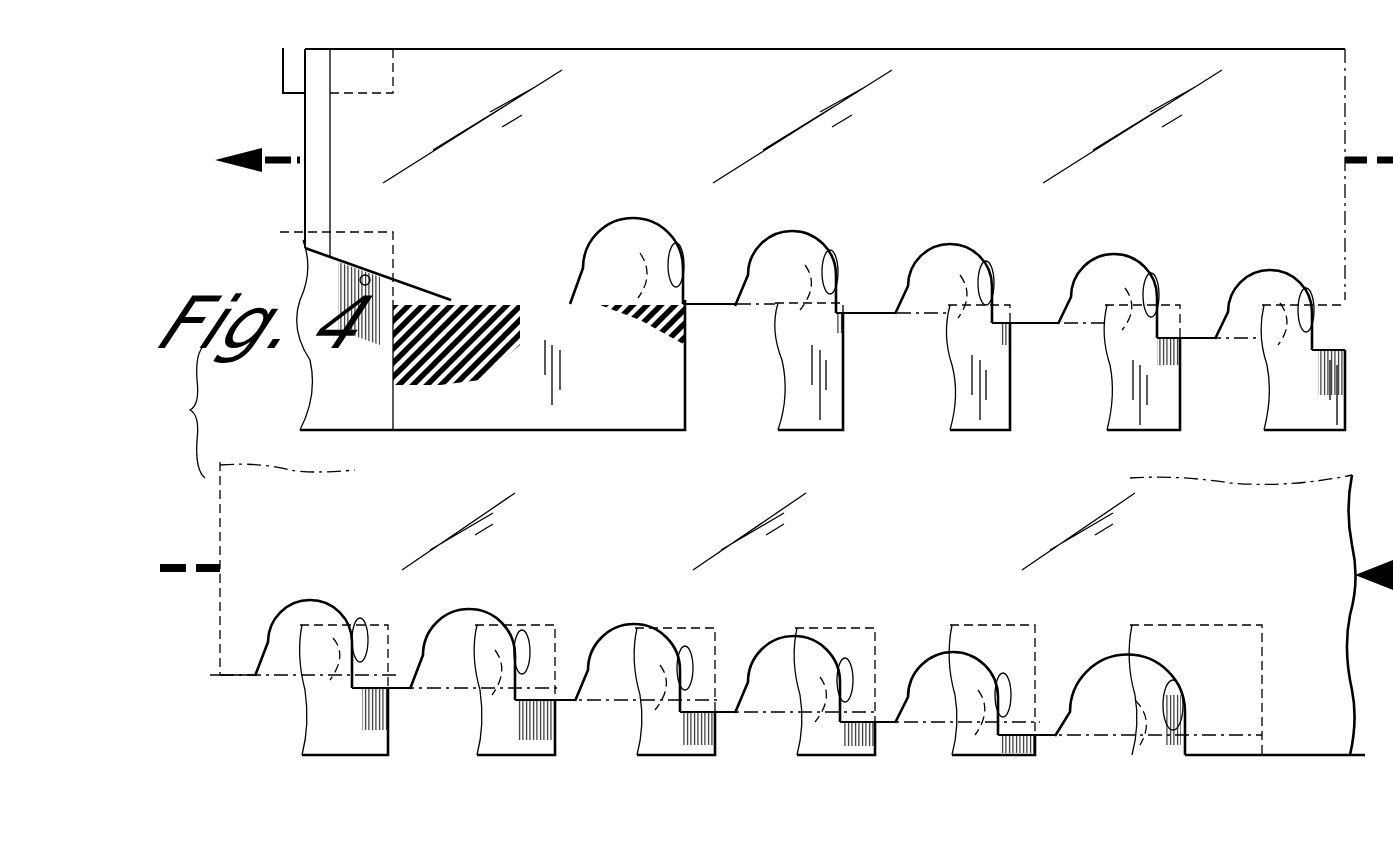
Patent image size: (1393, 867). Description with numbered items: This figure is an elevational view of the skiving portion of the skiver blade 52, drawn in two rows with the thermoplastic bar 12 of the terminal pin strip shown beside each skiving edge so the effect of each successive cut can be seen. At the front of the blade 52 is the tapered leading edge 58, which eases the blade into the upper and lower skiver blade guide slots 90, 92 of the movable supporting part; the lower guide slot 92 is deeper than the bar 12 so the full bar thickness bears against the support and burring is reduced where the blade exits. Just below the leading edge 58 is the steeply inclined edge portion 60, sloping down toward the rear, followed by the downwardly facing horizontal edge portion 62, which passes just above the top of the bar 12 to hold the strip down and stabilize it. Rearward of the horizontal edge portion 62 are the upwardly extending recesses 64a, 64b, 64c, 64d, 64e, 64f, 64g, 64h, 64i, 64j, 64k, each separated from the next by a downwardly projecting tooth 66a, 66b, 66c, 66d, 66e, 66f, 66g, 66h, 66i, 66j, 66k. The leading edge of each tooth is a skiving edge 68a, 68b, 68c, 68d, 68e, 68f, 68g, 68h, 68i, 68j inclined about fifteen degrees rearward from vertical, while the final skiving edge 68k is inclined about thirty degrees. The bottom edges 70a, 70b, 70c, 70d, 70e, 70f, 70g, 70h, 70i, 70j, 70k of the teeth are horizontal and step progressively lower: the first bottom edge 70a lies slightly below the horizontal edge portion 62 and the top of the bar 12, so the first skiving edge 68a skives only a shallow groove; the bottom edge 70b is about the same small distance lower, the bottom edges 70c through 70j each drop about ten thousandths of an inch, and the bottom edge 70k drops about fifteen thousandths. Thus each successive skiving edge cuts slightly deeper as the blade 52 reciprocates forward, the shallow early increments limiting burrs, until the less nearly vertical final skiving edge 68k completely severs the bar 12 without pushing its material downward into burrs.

The thermoplastic bar 12 is at (665, 395).
The skiver blade 52 is at (1335, 208).
The leading edge 58 is at (312, 192).
The inclined edge portion 60 is at (380, 282).
The horizontal edge portion 62 is at (553, 308).
The upper skiver blade guide slot 90 is at (300, 75).
The lower skiver blade guide slot 92 is at (345, 352).
The recess 64a is at (640, 227).
The recess 64b is at (802, 234).
The recess 64c is at (955, 240).
The recess 64d is at (1118, 258).
The recess 64e is at (1278, 270).
The recess 64f is at (326, 605).
The recess 64g is at (478, 614).
The recess 64h is at (630, 632).
The recess 64i is at (782, 640).
The recess 64j is at (945, 656).
The recess 64k is at (1105, 672).
The first skiving edge 68a is at (683, 248).
The skiving edge 68b is at (838, 255).
The skiving edge 68c is at (1000, 260).
The skiving edge 68d is at (1163, 282).
The skiving edge 68e is at (1320, 288).
The skiving edge 68f is at (368, 625).
The skiving edge 68g is at (520, 632).
The skiving edge 68h is at (686, 640).
The skiving edge 68i is at (846, 670).
The skiving edge 68j is at (1003, 682).
The final skiving edge 68k is at (1176, 688).
The tooth 66a is at (700, 285).
The tooth 66b is at (870, 282).
The tooth 66c is at (1028, 290).
The tooth 66d is at (1200, 298).
The tooth 66e is at (240, 665).
The tooth 66f is at (398, 670).
The tooth 66g is at (570, 672).
The tooth 66h is at (733, 688).
The tooth 66i is at (890, 712).
The tooth 66j is at (1048, 738).
The tooth 66k is at (1192, 752).
The bottom edge 70a is at (718, 305).
The bottom edge 70b is at (887, 313).
The bottom edge 70c is at (1045, 323).
The bottom edge 70d is at (1213, 338).
The bottom edge 70e is at (1340, 352).
The bottom edge 70f is at (415, 690).
The bottom edge 70g is at (600, 702).
The bottom edge 70h is at (707, 728).
The bottom edge 70i is at (897, 722).
The bottom edge 70j is at (1055, 740).
The bottom edge 70k is at (1255, 760).